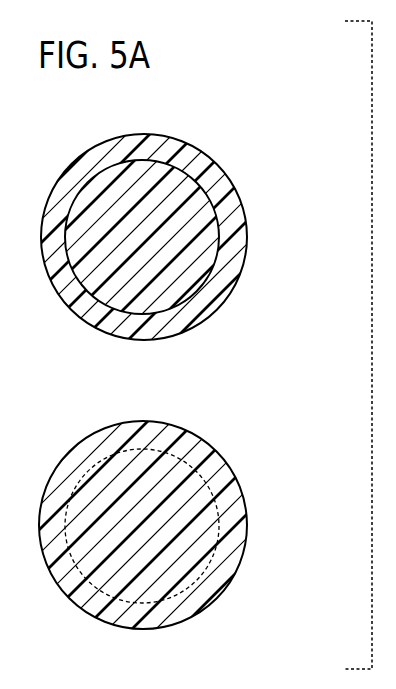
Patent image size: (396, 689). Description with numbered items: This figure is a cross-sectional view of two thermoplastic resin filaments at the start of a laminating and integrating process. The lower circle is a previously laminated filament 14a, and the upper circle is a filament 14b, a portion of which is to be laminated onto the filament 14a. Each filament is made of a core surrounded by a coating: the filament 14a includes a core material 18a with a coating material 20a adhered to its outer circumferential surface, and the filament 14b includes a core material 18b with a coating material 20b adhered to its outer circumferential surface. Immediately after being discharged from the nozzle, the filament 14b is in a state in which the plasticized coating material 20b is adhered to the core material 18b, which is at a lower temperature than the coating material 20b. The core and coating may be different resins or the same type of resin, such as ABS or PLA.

The previously laminated filament 14a is at (198, 344).
The filament 14b is at (198, 344).
The core material 18a is at (193, 511).
The core material 18b is at (193, 220).
The coating material 20a is at (229, 557).
The coating material 20b is at (229, 267).